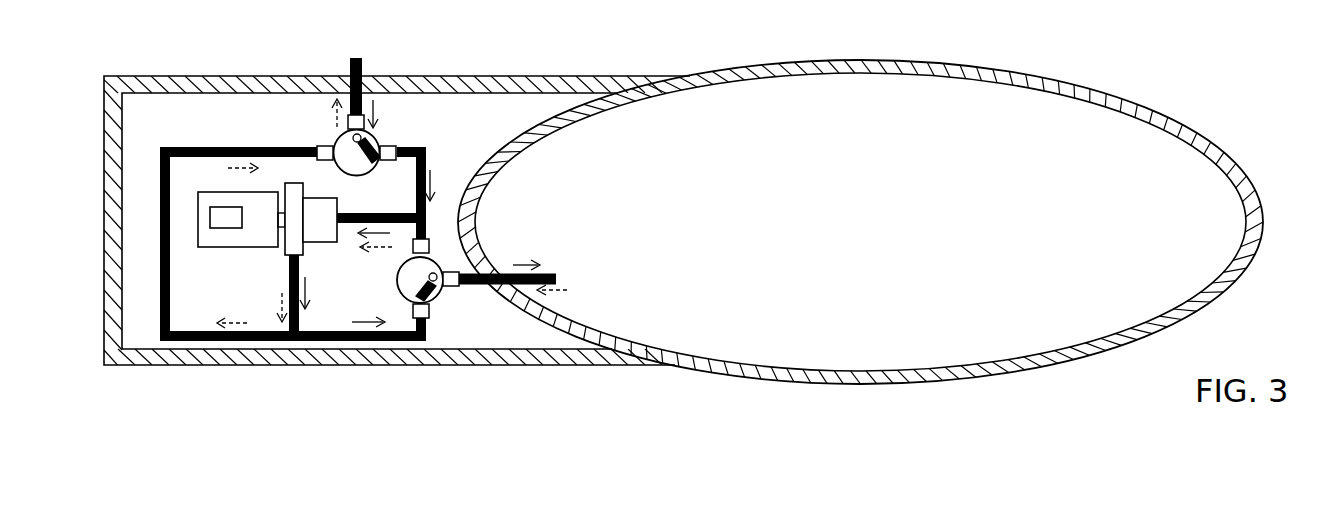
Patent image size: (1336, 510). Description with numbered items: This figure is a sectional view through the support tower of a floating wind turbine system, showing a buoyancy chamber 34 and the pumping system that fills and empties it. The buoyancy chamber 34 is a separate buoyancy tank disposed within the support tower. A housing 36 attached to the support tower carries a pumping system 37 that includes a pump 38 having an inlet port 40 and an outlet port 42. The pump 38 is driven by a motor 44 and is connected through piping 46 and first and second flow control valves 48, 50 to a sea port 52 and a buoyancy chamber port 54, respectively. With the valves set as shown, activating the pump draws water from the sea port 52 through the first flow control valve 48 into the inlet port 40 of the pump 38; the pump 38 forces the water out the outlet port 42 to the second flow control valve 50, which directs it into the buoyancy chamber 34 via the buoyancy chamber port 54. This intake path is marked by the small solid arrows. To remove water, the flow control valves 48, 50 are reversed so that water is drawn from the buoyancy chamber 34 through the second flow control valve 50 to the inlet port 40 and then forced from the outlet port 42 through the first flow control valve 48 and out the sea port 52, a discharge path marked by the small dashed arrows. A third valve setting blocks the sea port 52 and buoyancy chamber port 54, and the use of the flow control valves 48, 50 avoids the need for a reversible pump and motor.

The buoyancy chamber 34 is at (900, 232).
The housing 36 is at (398, 365).
The pumping system 37 is at (497, 318).
The pump 38 is at (323, 243).
The inlet port 40 is at (340, 203).
The outlet port 42 is at (287, 256).
The motor 44 is at (223, 247).
The piping 46 is at (268, 147).
The first flow control valve 48 is at (334, 142).
The second flow control valve 50 is at (436, 297).
The sea port 52 is at (351, 57).
The buoyancy chamber port 54 is at (558, 278).